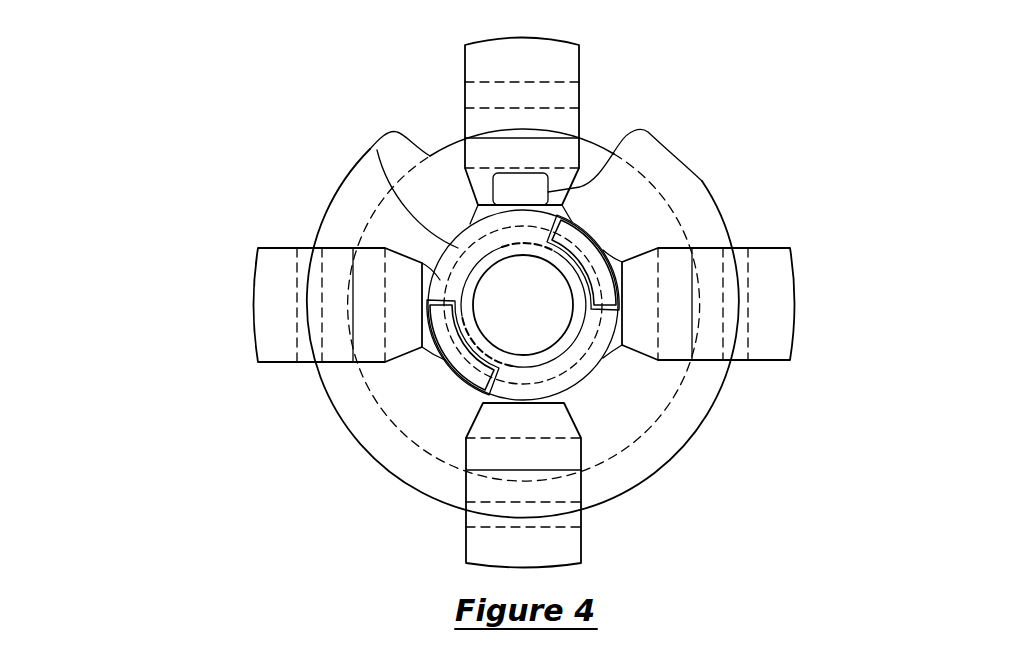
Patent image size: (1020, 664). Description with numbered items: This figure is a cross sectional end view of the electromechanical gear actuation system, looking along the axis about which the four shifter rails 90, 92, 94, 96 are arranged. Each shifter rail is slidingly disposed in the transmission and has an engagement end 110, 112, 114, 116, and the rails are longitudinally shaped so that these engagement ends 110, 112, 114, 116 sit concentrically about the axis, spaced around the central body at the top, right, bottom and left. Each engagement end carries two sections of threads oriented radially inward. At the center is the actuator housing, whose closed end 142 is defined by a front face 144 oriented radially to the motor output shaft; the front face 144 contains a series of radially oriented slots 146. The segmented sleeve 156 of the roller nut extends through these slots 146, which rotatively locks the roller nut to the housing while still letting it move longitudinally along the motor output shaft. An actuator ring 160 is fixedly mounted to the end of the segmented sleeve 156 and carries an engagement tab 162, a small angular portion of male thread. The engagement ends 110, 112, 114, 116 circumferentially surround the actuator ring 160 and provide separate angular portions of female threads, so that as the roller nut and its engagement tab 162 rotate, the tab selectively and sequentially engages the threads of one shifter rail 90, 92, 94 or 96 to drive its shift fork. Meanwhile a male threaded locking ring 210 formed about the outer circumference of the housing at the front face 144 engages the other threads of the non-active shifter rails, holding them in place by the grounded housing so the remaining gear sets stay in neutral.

The shifter rail 90 is at (580, 62).
The engagement end 110 is at (580, 80).
The engagement tab 162 is at (630, 122).
The closed end 142 is at (643, 198).
The front face 144 is at (663, 228).
The segmented sleeve 156 is at (605, 282).
The engagement end 112 is at (792, 267).
The shifter rail 92 is at (790, 330).
The slots 146 is at (620, 317).
The locking ring 210 is at (687, 442).
The shifter rail 94 is at (581, 527).
The engagement end 114 is at (581, 563).
The actuator ring 160 is at (373, 145).
The shifter rail 96 is at (278, 248).
The engagement end 116 is at (252, 290).